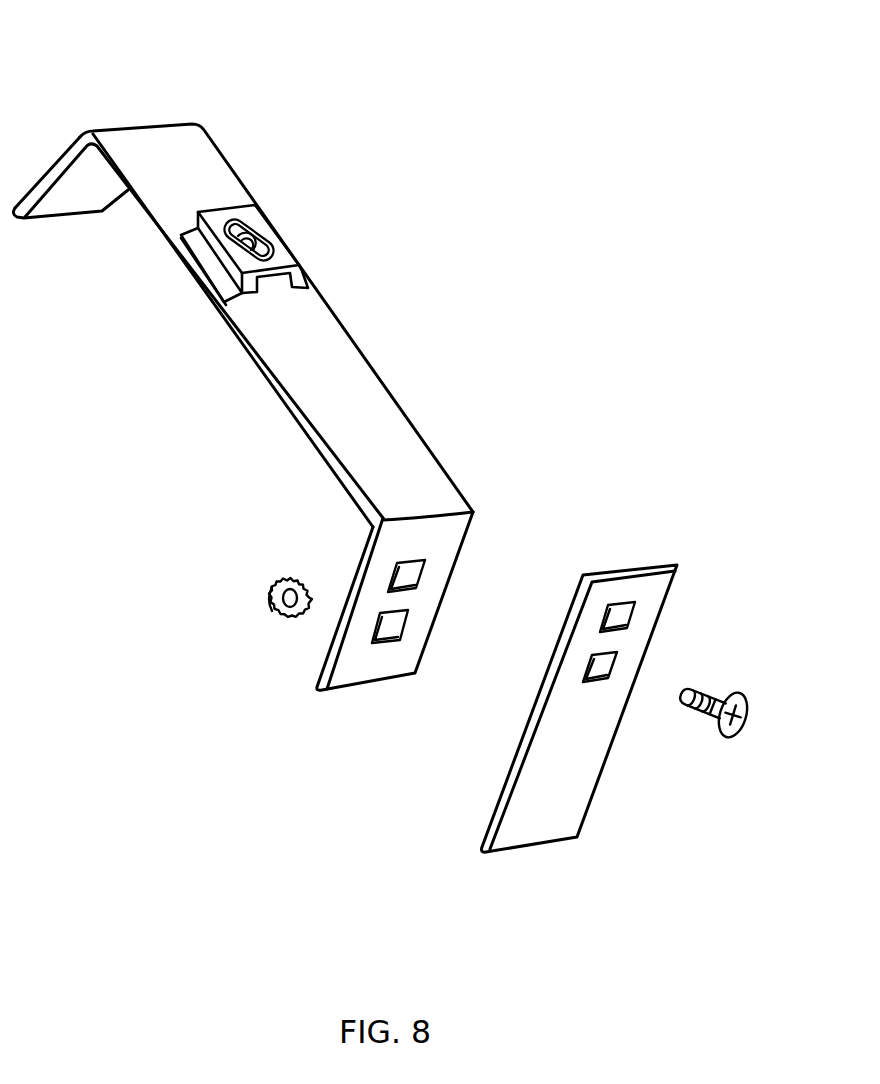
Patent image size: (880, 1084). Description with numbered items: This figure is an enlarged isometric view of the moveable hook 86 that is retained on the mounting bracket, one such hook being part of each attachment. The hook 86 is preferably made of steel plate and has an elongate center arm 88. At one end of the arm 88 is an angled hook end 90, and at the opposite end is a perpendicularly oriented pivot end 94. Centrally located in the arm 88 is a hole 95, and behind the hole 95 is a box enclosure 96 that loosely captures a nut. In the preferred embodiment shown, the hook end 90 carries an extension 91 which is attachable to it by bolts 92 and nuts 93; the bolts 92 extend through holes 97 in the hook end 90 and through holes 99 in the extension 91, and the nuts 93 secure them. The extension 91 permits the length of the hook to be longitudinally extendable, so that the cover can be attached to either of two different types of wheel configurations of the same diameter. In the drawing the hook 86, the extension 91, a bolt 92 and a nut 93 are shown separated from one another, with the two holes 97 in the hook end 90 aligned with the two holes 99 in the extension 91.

The moveable hook 86 is at (312, 367).
The elongate center arm 88 is at (258, 375).
The angled hook end 90 is at (396, 597).
The extension 91 is at (625, 705).
The bolt 92 is at (743, 684).
The nut 93 is at (258, 598).
The pivot end 94 is at (45, 160).
The hole 95 is at (257, 252).
The box enclosure 96 is at (307, 179).
The holes in hook end 97 is at (410, 625).
The holes in extension 99 is at (627, 665).